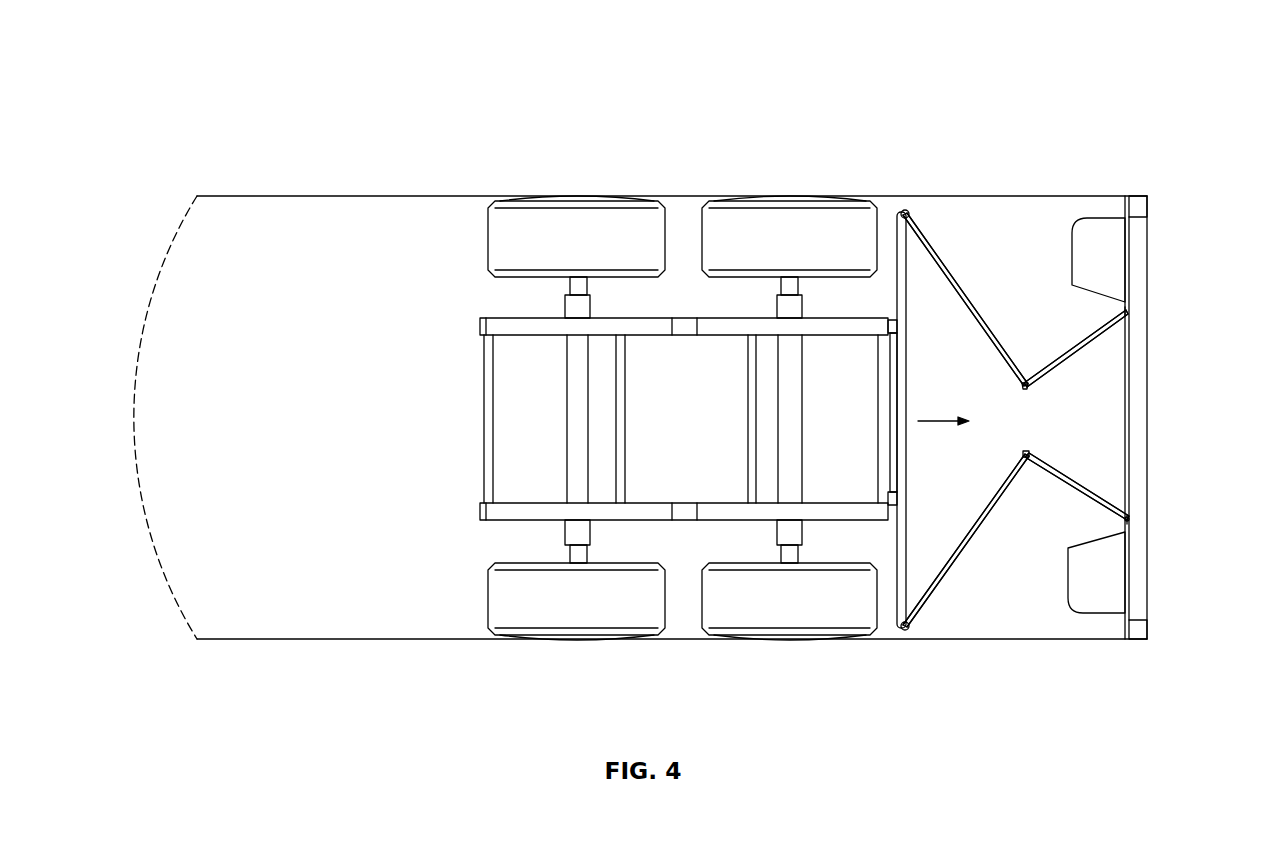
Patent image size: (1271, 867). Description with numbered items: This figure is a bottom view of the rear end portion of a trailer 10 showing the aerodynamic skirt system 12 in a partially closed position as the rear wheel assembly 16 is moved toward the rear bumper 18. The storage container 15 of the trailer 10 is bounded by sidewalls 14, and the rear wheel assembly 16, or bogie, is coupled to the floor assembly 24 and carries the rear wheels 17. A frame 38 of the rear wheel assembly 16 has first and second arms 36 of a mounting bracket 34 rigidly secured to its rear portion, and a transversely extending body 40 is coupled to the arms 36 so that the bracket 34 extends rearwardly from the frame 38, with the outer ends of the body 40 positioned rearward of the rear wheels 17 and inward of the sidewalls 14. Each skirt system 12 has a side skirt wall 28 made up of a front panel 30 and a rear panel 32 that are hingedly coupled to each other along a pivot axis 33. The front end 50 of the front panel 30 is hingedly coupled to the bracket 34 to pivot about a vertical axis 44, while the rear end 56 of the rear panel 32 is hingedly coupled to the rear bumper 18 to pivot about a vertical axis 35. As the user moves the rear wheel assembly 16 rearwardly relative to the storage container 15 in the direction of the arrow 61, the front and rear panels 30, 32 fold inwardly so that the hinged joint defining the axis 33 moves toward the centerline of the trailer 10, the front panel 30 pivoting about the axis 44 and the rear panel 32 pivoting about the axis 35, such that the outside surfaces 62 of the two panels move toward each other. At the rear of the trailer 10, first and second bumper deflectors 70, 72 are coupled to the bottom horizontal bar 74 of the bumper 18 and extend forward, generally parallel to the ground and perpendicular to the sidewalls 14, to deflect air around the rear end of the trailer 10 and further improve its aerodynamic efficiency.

The trailer 10 is at (168, 98).
The aerodynamic skirt system 12 is at (1103, 352).
The sidewall 14 is at (432, 196).
The storage container 15 is at (250, 248).
The rear wheel assembly 16 is at (578, 185).
The rear wheels 17 is at (790, 238).
The rear bumper 18 is at (1165, 593).
The floor assembly 24 is at (297, 600).
The side skirt wall 28 is at (949, 253).
The front panel 30 is at (973, 290).
The rear panel 32 is at (1073, 325).
The pivot axis 33 is at (1023, 392).
The mounting bracket 34 is at (884, 420).
The vertical axis 35 is at (1130, 520).
The arms 36 is at (888, 338).
The frame 38 is at (704, 308).
The transversely extending body 40 is at (908, 356).
The vertical axis 44 is at (903, 210).
The front end 50 is at (910, 216).
The rear end 56 is at (1130, 317).
The arrow 61 is at (947, 424).
The outside surfaces 62 is at (1080, 488).
The first bumper deflector 70 is at (1097, 262).
The second bumper deflector 72 is at (1100, 572).
The bottom horizontal bar 74 is at (1137, 293).